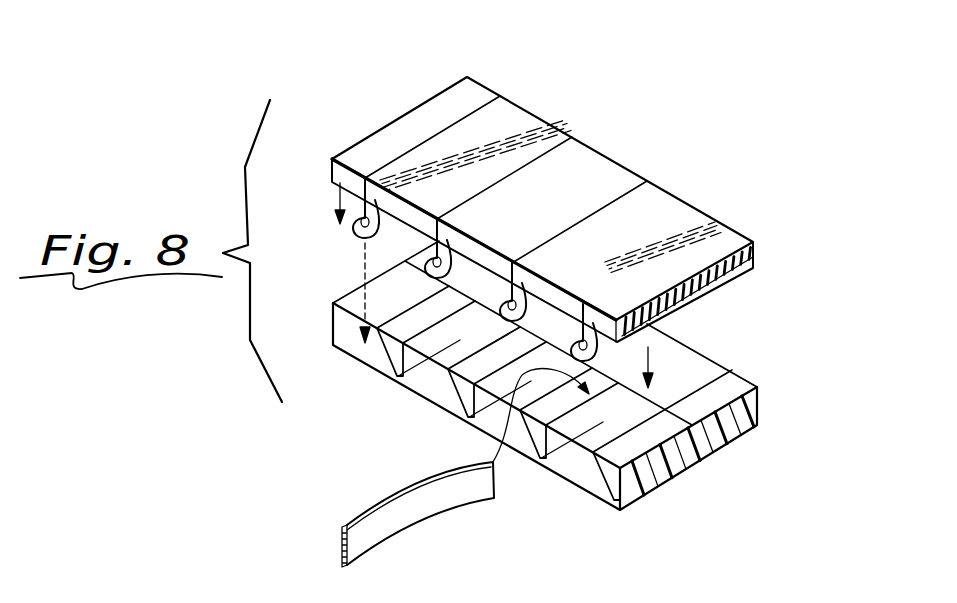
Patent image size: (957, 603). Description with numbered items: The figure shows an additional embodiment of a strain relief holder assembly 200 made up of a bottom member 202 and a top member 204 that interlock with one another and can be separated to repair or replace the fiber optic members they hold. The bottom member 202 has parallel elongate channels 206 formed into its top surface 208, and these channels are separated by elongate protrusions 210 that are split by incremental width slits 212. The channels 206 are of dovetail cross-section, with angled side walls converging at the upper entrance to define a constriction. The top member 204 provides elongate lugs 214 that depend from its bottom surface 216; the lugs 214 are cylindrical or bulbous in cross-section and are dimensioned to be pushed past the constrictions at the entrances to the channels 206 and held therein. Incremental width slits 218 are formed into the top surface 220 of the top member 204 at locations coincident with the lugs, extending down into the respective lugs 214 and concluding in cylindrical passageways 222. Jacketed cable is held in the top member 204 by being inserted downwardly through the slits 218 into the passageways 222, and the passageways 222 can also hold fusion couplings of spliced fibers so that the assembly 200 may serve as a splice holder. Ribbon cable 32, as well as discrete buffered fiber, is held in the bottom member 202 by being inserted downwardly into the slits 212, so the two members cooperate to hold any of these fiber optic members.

The strain relief holder assembly 200 is at (784, 230).
The bottom member 202 is at (723, 440).
The top member 204 is at (677, 203).
The elongate channels 206 is at (710, 363).
The top surface 208 is at (760, 377).
The elongate protrusions 210 is at (667, 337).
The incremental width slits 212 is at (400, 348).
The elongate lugs 214 is at (505, 308).
The bottom surface 216 is at (727, 282).
The incremental width slits 218 is at (482, 187).
The top surface 220 is at (585, 158).
The cylindrical passageways 222 is at (437, 267).
The ribbon cable 32 is at (395, 517).